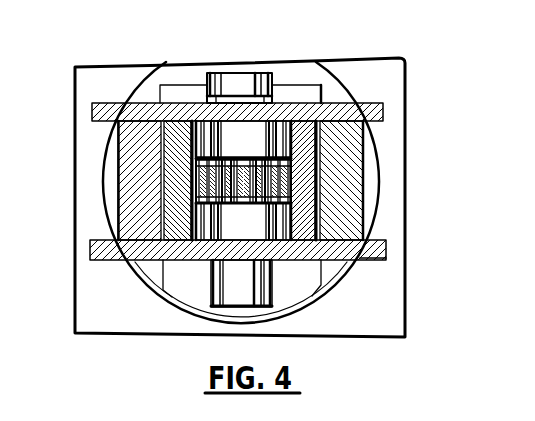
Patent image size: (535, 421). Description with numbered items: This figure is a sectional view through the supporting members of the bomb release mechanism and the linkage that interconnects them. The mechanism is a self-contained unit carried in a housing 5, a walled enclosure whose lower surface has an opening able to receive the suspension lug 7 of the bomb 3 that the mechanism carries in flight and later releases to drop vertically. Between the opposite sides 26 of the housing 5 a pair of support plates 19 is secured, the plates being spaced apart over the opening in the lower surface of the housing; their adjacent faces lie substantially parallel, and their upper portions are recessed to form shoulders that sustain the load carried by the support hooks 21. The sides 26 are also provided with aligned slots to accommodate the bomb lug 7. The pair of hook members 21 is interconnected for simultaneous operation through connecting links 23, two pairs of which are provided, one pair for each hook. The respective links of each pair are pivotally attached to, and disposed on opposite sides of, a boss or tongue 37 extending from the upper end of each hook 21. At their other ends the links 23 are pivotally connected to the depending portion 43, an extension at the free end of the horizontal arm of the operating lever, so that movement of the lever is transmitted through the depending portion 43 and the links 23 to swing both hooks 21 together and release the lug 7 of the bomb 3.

The bomb 3 is at (393, 321).
The housing 5 is at (374, 262).
The suspension lug 7 is at (243, 298).
The support plate 19 is at (128, 229).
The support hook 21 is at (175, 140).
The connecting link 23 is at (230, 160).
The housing side 26 is at (103, 112).
The tongue 37 is at (190, 162).
The depending portion 43 is at (248, 156).